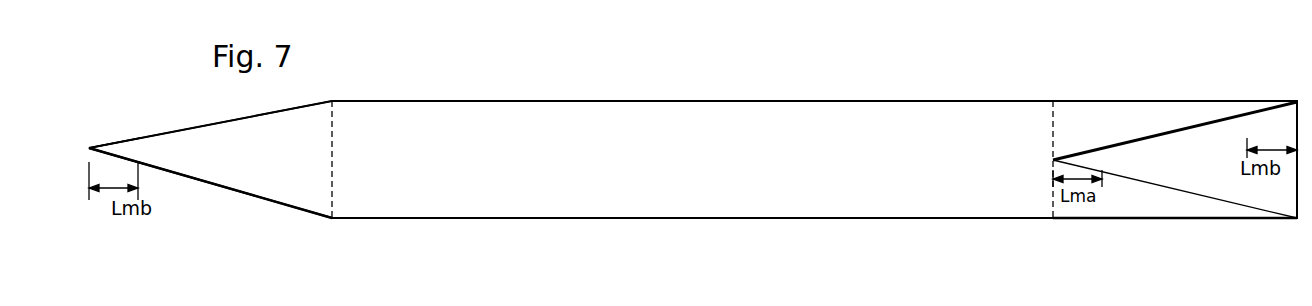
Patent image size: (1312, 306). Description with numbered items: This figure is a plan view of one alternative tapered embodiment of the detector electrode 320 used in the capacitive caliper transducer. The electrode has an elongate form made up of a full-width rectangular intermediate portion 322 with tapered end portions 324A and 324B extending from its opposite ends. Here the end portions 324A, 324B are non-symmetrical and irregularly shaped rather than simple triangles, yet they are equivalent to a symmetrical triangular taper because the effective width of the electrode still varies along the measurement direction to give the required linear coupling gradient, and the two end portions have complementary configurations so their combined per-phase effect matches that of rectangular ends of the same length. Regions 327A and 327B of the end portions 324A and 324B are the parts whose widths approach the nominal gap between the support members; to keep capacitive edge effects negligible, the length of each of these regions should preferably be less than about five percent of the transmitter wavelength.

The detector electrode 320 is at (677, 92).
The rectangular intermediate portion 322 is at (690, 172).
The end portion 324A is at (272, 155).
The end portion 324B is at (1128, 101).
The region 327A is at (1080, 161).
The region 327B is at (112, 180).